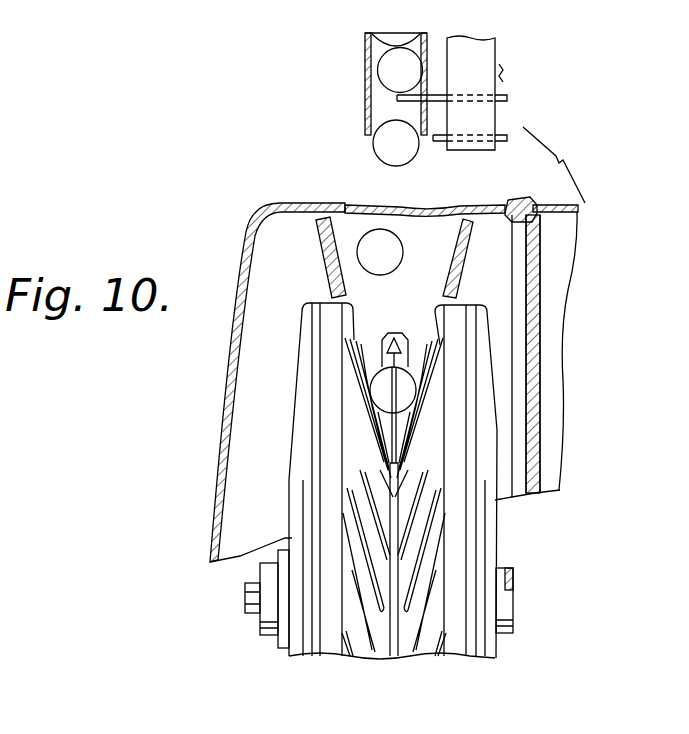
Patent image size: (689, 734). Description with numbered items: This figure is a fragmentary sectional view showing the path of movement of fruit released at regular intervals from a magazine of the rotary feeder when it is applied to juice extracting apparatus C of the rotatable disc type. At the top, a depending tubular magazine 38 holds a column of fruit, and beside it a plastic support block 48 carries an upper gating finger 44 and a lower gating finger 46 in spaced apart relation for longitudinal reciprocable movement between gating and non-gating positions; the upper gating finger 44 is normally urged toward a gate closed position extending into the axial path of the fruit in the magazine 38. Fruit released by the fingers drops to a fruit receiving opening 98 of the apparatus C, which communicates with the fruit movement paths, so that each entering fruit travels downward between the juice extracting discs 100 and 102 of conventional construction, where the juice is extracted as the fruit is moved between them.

The tubular magazine 38 is at (365, 72).
The support block 48 is at (483, 45).
The upper gating finger 44 is at (506, 100).
The lower gating finger 46 is at (505, 143).
The fruit receiving opening 98 is at (355, 168).
The juice extracting apparatus C is at (274, 203).
The juice extracting disc 100 is at (303, 316).
The juice extracting disc 102 is at (487, 326).